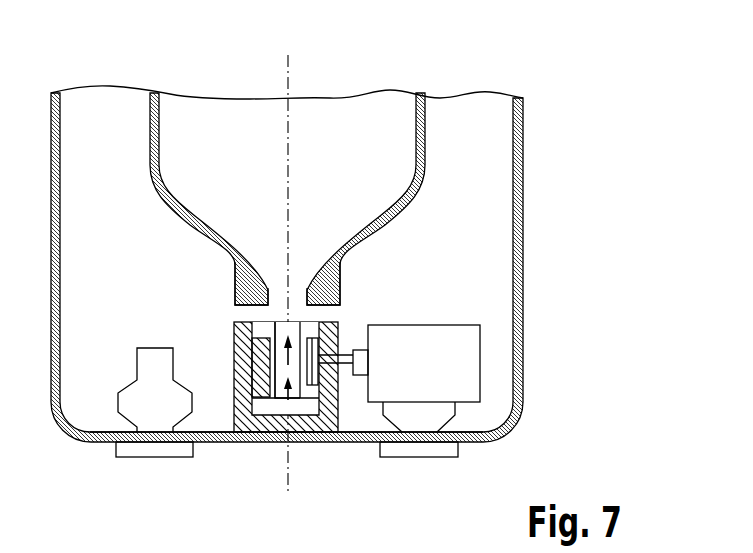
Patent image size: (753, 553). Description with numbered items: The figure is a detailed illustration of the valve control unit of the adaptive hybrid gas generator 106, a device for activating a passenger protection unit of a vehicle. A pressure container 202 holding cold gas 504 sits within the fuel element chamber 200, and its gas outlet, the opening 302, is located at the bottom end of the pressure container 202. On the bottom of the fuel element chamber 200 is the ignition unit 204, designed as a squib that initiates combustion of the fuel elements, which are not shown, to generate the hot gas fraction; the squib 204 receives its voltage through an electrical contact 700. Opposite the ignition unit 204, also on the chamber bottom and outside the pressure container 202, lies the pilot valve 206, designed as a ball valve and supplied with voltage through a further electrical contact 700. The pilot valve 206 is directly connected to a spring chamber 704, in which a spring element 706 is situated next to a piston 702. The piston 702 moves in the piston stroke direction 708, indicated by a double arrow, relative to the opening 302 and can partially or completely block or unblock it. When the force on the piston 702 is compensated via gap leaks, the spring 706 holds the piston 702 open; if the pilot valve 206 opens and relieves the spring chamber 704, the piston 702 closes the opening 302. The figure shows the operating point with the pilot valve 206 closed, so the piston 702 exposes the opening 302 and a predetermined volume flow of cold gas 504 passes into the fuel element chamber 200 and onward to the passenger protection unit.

The adaptive hybrid gas generator 106 is at (580, 42).
The fuel element chamber 200 is at (518, 160).
The pressure container 202 is at (156, 132).
The ignition unit 204 is at (118, 403).
The pilot valve 206 is at (480, 362).
The opening 302 is at (215, 308).
The cold gas 504 is at (362, 118).
The electrical contact 700 is at (151, 447).
The piston 702 is at (312, 392).
The spring chamber 704 is at (262, 376).
The spring element 706 is at (252, 340).
The piston stroke direction 708 is at (284, 360).